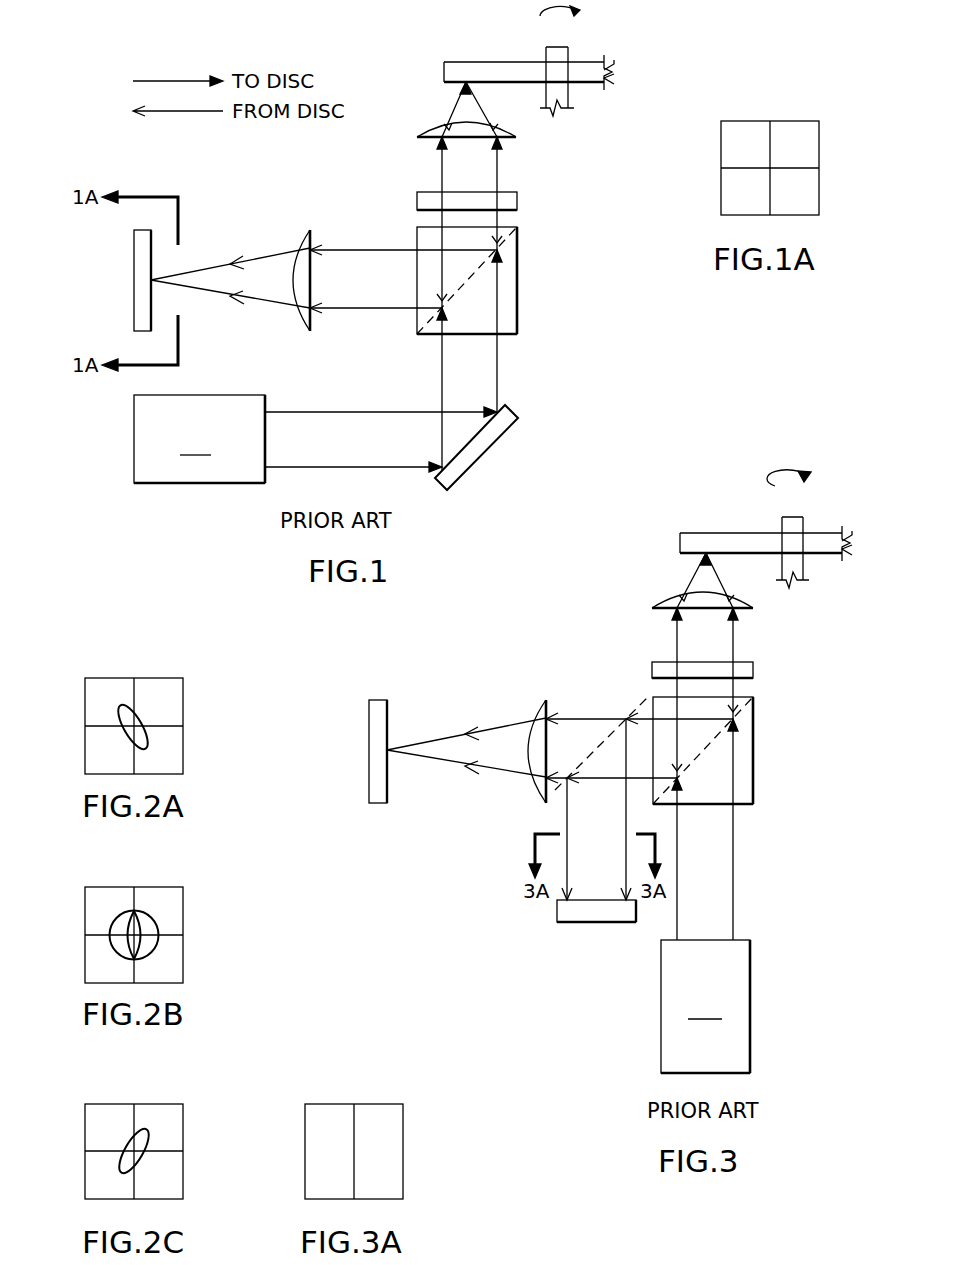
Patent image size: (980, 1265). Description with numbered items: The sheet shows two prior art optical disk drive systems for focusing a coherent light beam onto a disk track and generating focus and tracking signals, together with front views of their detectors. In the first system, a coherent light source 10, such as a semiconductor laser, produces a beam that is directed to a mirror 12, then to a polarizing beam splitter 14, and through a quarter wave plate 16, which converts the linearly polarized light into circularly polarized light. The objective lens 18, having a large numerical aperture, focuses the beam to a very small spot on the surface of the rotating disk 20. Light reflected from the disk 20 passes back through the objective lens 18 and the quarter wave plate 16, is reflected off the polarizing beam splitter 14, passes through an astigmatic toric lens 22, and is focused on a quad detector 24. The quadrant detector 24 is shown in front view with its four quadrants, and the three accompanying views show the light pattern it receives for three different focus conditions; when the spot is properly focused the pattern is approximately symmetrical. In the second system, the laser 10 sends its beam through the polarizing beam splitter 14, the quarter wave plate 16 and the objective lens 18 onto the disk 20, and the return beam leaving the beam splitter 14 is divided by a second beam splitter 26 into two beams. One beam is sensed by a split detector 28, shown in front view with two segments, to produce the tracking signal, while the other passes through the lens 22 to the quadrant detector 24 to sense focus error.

In FIG. 1, the coherent light source 10 is at (315, 439).
In FIG. 3, the coherent light source 10 is at (705, 1006).
In FIG. 1, the mirror 12 is at (495, 445).
In FIG. 1, the polarizing beam splitter 14 is at (517, 270).
In FIG. 3, the polarizing beam splitter 14 is at (753, 740).
In FIG. 1, the quarter wave plate 16 is at (517, 200).
In FIG. 3, the quarter wave plate 16 is at (753, 670).
In FIG. 1, the objective lens 18 is at (516, 137).
In FIG. 3, the objective lens 18 is at (753, 608).
In FIG. 1, the disk 20 is at (490, 62).
In FIG. 3, the disk 20 is at (680, 533).
In FIG. 1, the toric lens 22 is at (306, 243).
In FIG. 3, the toric lens 22 is at (538, 715).
In FIG. 1, the quadrant detector 24 is at (134, 280).
In FIG. 1A, the quadrant detector 24 is at (786, 121).
In FIG. 2A, the quadrant detector 24 is at (85, 715).
In FIG. 2B, the quadrant detector 24 is at (85, 920).
In FIG. 2C, the quadrant detector 24 is at (85, 1125).
In FIG. 3, the quadrant detector 24 is at (369, 750).
In FIG. 3, the second beam splitter 26 is at (637, 707).
In FIG. 3A, the split detector 28 is at (403, 1143).
In FIG. 3, the split detector 28 is at (605, 925).